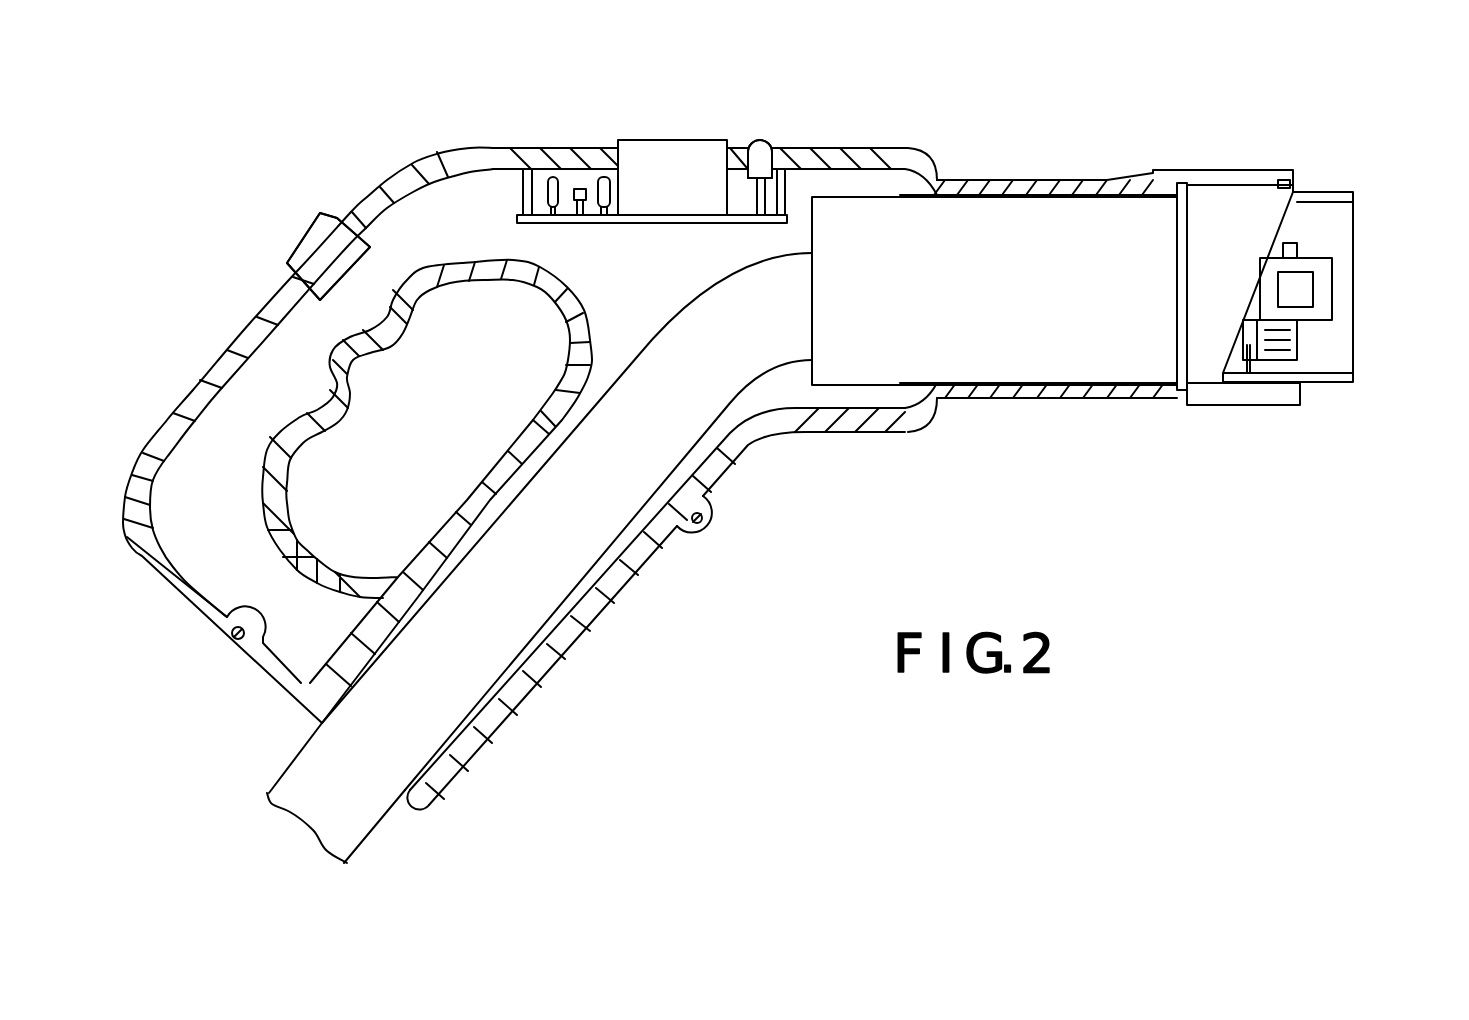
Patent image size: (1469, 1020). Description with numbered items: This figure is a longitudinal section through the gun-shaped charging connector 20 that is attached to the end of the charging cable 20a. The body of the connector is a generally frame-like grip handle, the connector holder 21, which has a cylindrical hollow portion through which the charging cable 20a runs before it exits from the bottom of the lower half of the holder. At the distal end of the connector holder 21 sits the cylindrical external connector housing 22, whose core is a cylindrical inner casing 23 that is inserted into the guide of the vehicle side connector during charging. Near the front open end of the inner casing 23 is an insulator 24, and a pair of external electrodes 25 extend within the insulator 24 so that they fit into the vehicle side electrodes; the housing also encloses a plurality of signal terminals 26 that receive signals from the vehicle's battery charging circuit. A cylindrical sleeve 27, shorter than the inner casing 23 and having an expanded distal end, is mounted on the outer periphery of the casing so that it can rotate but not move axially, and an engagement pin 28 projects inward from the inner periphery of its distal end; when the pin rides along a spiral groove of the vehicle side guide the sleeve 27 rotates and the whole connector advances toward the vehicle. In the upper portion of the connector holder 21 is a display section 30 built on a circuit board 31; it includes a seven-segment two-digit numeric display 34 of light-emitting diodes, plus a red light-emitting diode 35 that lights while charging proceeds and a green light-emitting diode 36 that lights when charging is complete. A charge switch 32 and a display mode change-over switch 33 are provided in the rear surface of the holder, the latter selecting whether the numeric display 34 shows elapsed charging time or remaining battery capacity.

The charging connector 20 is at (952, 86).
The charging cable 20a is at (370, 807).
The connector holder 21 is at (438, 158).
The external connector housing 22 is at (1384, 226).
The inner casing 23 is at (1004, 366).
The insulator 24 is at (1258, 322).
The external electrodes 25 is at (1305, 287).
The signal terminals 26 is at (1295, 333).
The sleeve 27 is at (1070, 179).
The engagement pin 28 is at (1290, 194).
The display section 30 is at (717, 90).
The circuit board 31 is at (600, 226).
The charge switch 32 is at (306, 236).
The display mode change-over switch 33 is at (328, 256).
The numeric display 34 is at (643, 141).
The red light-emitting diode 35 is at (760, 143).
The green light-emitting diode 36 is at (760, 159).